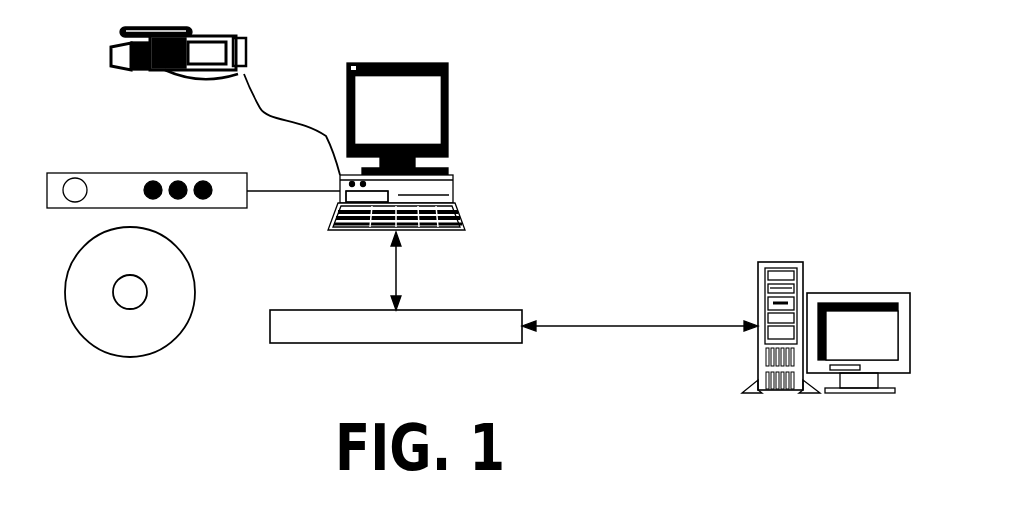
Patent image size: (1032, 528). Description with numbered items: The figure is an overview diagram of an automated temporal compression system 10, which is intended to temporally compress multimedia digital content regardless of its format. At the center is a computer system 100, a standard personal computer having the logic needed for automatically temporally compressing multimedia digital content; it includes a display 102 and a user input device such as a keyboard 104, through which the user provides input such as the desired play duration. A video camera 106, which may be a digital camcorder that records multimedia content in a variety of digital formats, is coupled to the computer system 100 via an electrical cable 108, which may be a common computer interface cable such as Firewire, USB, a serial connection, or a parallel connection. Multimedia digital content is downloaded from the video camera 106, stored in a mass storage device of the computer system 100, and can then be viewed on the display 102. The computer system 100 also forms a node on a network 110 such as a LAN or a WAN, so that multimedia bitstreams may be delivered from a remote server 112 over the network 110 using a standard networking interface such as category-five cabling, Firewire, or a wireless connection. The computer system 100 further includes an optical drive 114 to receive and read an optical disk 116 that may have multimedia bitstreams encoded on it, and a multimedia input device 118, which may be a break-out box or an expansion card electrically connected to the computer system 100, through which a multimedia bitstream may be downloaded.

The automated temporal compression system 10 is at (628, 90).
The computer system 100 is at (470, 202).
The display 102 is at (441, 65).
The keyboard 104 is at (421, 232).
The video camera 106 is at (221, 36).
The electrical cable 108 is at (263, 112).
The network 110 is at (268, 312).
The remote server 112 is at (800, 262).
The optical drive 114 is at (343, 198).
The optical disk 116 is at (127, 358).
The multimedia input device 118 is at (112, 173).